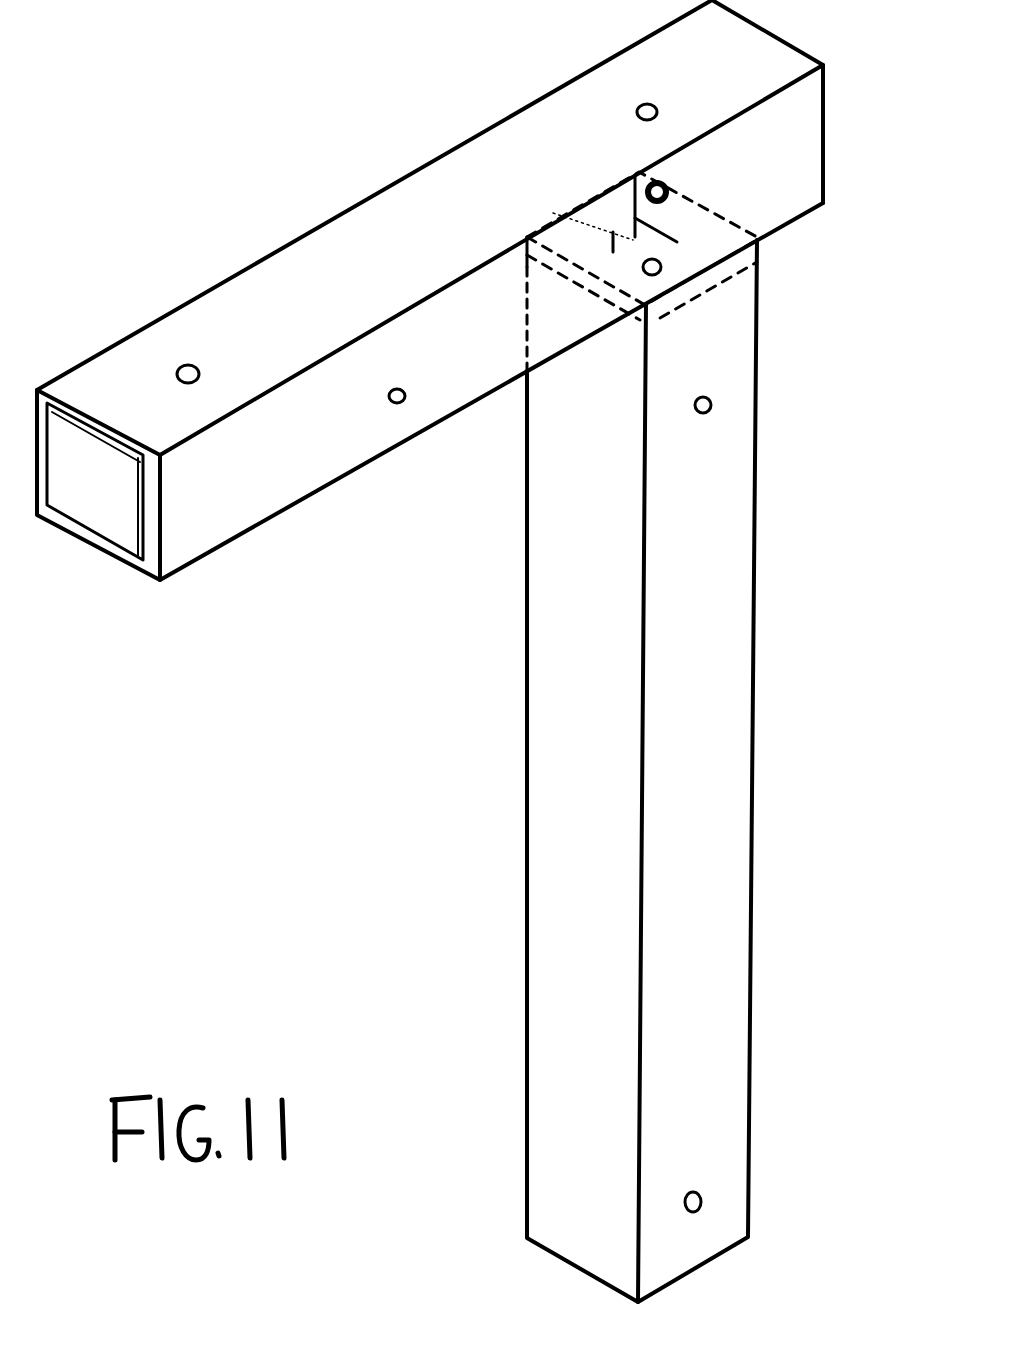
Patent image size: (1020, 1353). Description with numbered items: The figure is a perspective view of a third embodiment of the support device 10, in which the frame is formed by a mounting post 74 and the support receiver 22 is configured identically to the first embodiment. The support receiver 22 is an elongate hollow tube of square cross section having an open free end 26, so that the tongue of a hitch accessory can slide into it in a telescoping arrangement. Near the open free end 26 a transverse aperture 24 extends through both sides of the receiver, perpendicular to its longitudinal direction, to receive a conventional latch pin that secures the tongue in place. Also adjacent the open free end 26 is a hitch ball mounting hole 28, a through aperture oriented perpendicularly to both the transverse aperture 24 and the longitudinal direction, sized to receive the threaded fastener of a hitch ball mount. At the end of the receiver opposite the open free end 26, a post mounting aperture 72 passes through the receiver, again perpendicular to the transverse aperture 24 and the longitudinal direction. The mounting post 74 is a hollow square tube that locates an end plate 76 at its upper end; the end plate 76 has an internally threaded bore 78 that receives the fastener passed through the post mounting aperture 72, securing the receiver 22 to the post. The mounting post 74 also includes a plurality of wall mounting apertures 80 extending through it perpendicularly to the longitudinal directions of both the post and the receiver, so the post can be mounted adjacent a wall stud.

The support device 10 is at (290, 688).
The support receiver 22 is at (292, 268).
The transverse aperture 24 is at (388, 404).
The open free end 26 is at (113, 507).
The hitch ball mounting hole 28 is at (197, 366).
The post mounting aperture 72 is at (640, 100).
The mounting post 74 is at (740, 512).
The end plate 76 is at (703, 305).
The internally threaded bore 78 is at (662, 262).
The wall mounting apertures 80 is at (692, 404).